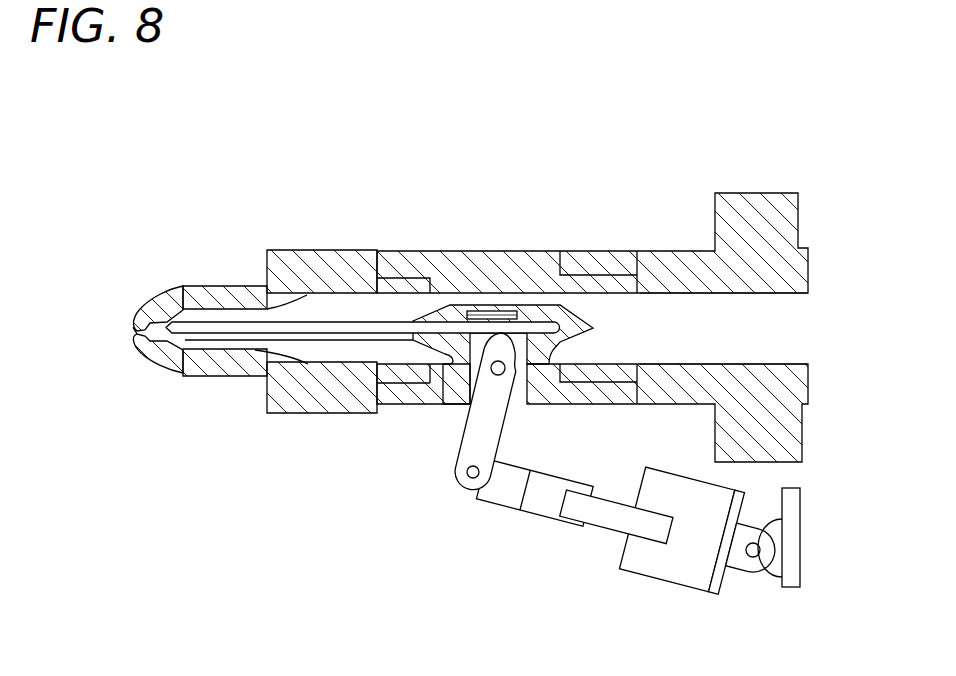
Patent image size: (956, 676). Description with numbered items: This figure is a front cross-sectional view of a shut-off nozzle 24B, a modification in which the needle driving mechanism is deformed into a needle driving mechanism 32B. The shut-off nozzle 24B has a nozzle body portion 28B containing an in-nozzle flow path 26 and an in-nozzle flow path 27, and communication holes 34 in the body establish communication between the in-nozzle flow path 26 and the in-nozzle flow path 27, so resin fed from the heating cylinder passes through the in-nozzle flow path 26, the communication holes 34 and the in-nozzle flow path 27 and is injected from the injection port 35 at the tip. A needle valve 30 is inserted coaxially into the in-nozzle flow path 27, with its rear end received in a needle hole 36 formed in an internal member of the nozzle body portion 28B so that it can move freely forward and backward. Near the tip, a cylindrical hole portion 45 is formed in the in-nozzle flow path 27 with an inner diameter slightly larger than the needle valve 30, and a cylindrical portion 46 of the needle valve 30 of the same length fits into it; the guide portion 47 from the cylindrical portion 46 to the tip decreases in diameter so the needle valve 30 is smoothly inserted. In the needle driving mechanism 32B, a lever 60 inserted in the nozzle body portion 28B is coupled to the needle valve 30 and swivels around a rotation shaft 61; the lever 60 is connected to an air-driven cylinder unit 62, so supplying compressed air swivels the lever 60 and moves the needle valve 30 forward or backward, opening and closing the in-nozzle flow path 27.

The shut-off nozzle 24B is at (587, 168).
The in-nozzle flow path 26 is at (712, 341).
The in-nozzle flow path 27 is at (200, 352).
The nozzle body portion 28B is at (312, 212).
The needle valve 30 is at (287, 322).
The needle driving mechanism 32B is at (410, 516).
The communication hole 34 is at (525, 302).
The injection port 35 is at (132, 337).
The needle hole 36 is at (413, 320).
The cylindrical hole portion 45 is at (143, 313).
The cylindrical portion 46 is at (178, 287).
The guide portion 47 is at (192, 346).
The lever 60 is at (465, 440).
The rotation shaft 61 is at (505, 376).
The cylinder unit 62 is at (620, 570).